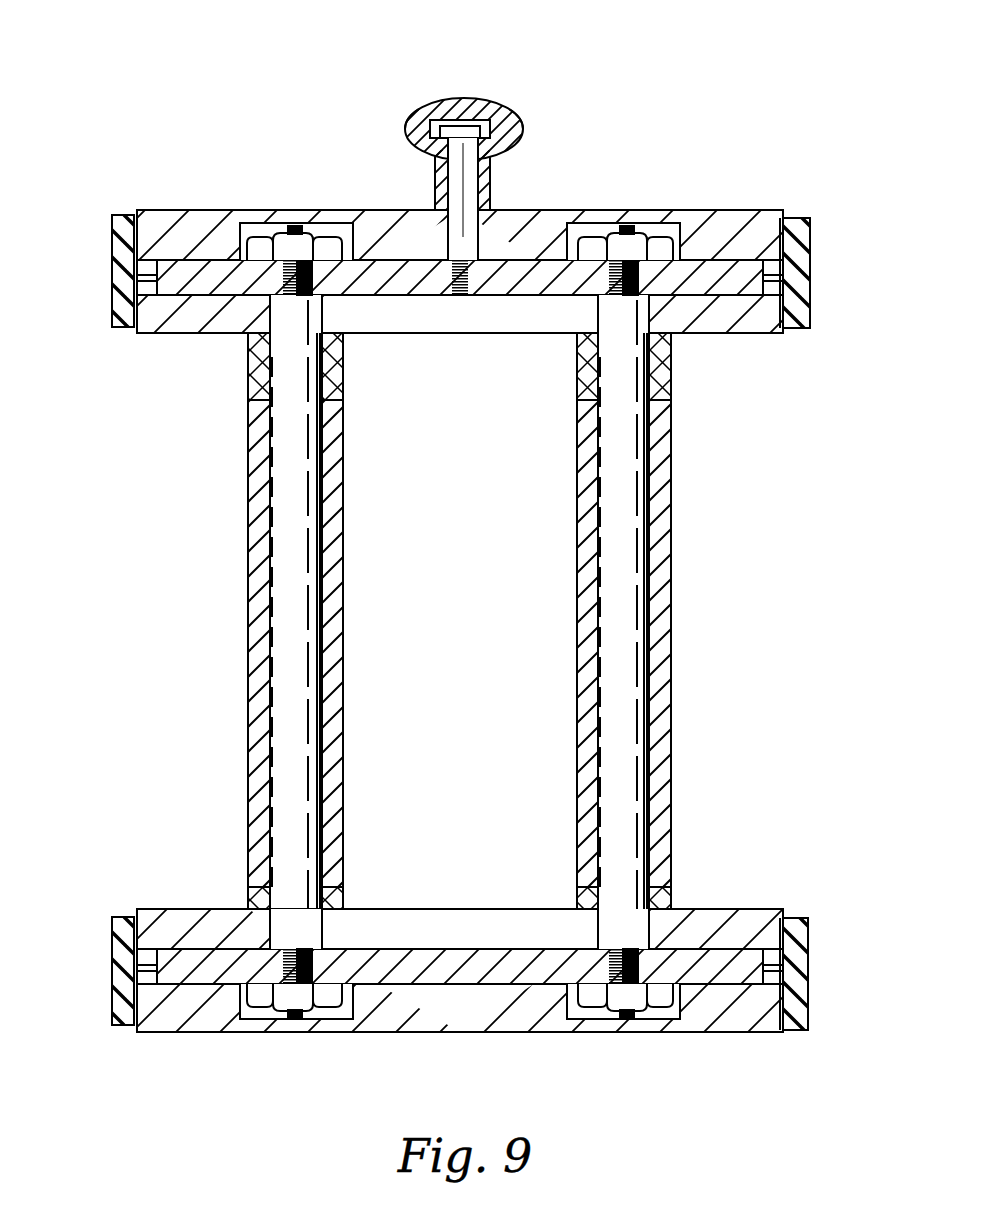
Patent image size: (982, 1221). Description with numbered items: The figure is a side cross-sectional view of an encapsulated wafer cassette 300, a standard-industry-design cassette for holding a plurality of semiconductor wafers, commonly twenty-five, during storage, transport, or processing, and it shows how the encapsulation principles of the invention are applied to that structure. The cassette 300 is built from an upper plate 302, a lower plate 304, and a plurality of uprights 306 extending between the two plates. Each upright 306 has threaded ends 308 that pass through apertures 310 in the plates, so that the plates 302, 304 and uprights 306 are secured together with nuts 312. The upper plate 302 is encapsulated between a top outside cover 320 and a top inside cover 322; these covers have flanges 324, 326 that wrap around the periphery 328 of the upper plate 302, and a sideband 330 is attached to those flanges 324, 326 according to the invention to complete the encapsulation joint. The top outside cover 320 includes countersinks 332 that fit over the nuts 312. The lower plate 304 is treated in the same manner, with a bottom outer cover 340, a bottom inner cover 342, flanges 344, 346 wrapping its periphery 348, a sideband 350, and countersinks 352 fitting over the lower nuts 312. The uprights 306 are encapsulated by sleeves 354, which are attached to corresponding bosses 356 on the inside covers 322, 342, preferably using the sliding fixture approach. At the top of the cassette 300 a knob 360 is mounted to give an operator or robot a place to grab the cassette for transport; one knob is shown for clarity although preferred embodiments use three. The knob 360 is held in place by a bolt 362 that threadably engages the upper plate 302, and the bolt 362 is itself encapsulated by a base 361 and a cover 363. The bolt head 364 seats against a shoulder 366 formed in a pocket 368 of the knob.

The encapsulated wafer cassette 300 is at (459, 554).
The upper plate 302 is at (188, 262).
The lower plate 304 is at (473, 976).
The uprights 306 is at (290, 513).
The threaded ends 308 is at (299, 228).
The apertures 310 is at (303, 300).
The nuts 312 is at (266, 238).
The top outside cover 320 is at (735, 216).
The top inside cover 322 is at (738, 328).
The flange 324 is at (146, 262).
The flange 326 is at (148, 334).
The periphery 328 is at (147, 278).
The sideband 330 is at (116, 262).
The countersinks 332 is at (336, 252).
The bottom outer cover 340 is at (748, 1024).
The bottom inner cover 342 is at (693, 920).
The flange 344 is at (147, 930).
The flange 346 is at (147, 1024).
The periphery 348 is at (786, 970).
The sideband 350 is at (118, 970).
The countersinks 352 is at (340, 1018).
The sleeves 354 is at (258, 597).
The bosses 356 is at (250, 352).
The knob 360 is at (456, 149).
The base 361 is at (432, 132).
The bolt 362 is at (492, 178).
The cover 363 is at (440, 104).
The bolt head 364 is at (463, 118).
The shoulder 366 is at (498, 110).
The pocket 368 is at (418, 112).